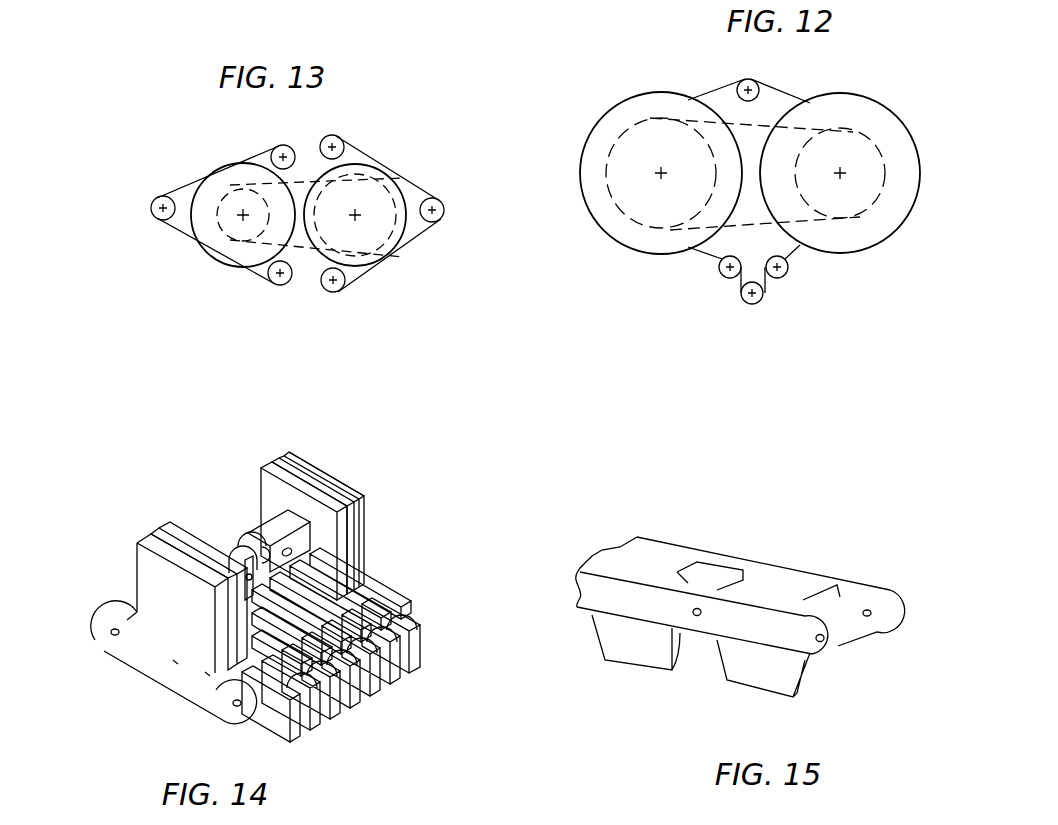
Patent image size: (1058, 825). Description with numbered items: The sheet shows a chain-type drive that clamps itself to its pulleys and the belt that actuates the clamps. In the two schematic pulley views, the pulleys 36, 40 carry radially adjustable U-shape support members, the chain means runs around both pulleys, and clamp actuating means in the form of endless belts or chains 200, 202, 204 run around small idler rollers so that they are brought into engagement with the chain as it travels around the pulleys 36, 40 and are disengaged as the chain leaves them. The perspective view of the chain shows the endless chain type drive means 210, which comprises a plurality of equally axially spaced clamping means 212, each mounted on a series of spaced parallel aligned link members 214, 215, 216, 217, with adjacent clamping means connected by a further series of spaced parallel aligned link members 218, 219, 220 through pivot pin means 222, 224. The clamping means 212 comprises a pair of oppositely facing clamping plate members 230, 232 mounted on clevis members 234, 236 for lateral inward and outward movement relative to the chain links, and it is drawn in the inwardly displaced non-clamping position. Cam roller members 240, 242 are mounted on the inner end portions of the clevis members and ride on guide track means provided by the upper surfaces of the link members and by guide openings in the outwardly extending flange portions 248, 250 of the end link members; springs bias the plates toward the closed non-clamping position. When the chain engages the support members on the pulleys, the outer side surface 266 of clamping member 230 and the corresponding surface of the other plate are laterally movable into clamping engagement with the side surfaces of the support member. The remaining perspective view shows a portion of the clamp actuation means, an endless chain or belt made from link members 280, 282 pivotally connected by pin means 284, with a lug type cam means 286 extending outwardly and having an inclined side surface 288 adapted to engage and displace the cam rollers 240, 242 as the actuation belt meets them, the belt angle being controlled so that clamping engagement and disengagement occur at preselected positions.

In FIG. 12, the pulley 36 is at (612, 231).
In FIG. 13, the pulley 36 is at (218, 243).
In FIG. 12, the pulley 40 is at (850, 248).
In FIG. 13, the pulley 40 is at (382, 252).
In FIG. 12, the clamp actuating belt 200 is at (708, 95).
In FIG. 15, the clamp actuating belt 200 is at (754, 593).
In FIG. 13, the clamp actuating belt 202 is at (192, 178).
In FIG. 13, the clamp actuating belt 204 is at (400, 170).
In FIG. 14, the endless chain type drive means 210 is at (404, 543).
In FIG. 14, the clamping means 212 is at (333, 447).
In FIG. 14, the link member 214 is at (130, 643).
In FIG. 14, the link member 215 is at (205, 673).
In FIG. 14, the link member 216 is at (370, 613).
In FIG. 14, the link member 217 is at (363, 580).
In FIG. 14, the link member 218 is at (295, 737).
In FIG. 14, the link member 219 is at (313, 732).
In FIG. 14, the link member 220 is at (416, 656).
In FIG. 14, the pivot pin means 222 is at (112, 630).
In FIG. 14, the pivot pin means 224 is at (238, 707).
In FIG. 14, the clamping plate member 230 is at (150, 562).
In FIG. 14, the clamping plate member 232 is at (363, 498).
In FIG. 14, the clevis member 234 is at (217, 552).
In FIG. 14, the clevis member 236 is at (340, 480).
In FIG. 14, the cam roller member 240 is at (230, 537).
In FIG. 14, the cam roller member 242 is at (298, 523).
In FIG. 14, the flange portion 248 is at (163, 527).
In FIG. 14, the flange portion 250 is at (258, 523).
In FIG. 14, the outer side surface 266 is at (173, 660).
In FIG. 15, the link member 280 is at (658, 537).
In FIG. 15, the link member 282 is at (885, 590).
In FIG. 15, the pin means 284 is at (697, 617).
In FIG. 15, the lug type cam means 286 is at (800, 690).
In FIG. 15, the inclined side surface 288 is at (760, 668).